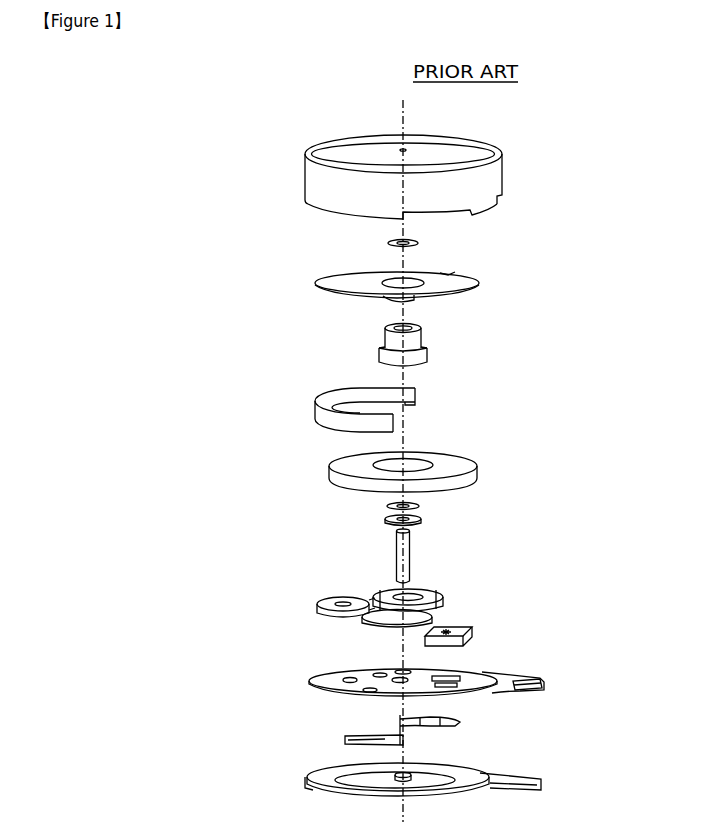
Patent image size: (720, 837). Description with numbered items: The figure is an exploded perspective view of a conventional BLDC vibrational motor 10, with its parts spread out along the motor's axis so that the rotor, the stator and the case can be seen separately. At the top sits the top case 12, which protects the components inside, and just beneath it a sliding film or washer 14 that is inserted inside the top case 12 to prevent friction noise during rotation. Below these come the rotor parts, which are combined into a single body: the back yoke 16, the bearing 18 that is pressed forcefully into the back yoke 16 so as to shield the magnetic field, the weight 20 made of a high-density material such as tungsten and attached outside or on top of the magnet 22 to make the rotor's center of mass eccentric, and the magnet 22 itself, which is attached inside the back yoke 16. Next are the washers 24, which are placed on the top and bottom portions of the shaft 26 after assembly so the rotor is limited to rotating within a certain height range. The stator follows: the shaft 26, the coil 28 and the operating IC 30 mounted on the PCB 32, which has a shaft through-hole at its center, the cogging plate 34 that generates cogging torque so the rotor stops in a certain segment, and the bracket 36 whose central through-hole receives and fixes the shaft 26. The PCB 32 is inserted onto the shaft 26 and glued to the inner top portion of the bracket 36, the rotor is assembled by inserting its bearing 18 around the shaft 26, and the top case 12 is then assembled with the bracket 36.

The BLDC vibrational motor 10 is at (598, 117).
The top case 12 is at (502, 172).
The sliding film or washer 14 is at (418, 241).
The back yoke 16 is at (445, 284).
The bearing 18 is at (420, 345).
The weight 20 is at (415, 395).
The magnet 22 is at (445, 463).
The washers 24 is at (421, 518).
The shaft 26 is at (410, 556).
The coil 28 is at (440, 597).
The operating IC 30 is at (472, 633).
The PCB 32 is at (510, 676).
The cogging plate 34 is at (450, 726).
The bracket 36 is at (462, 768).